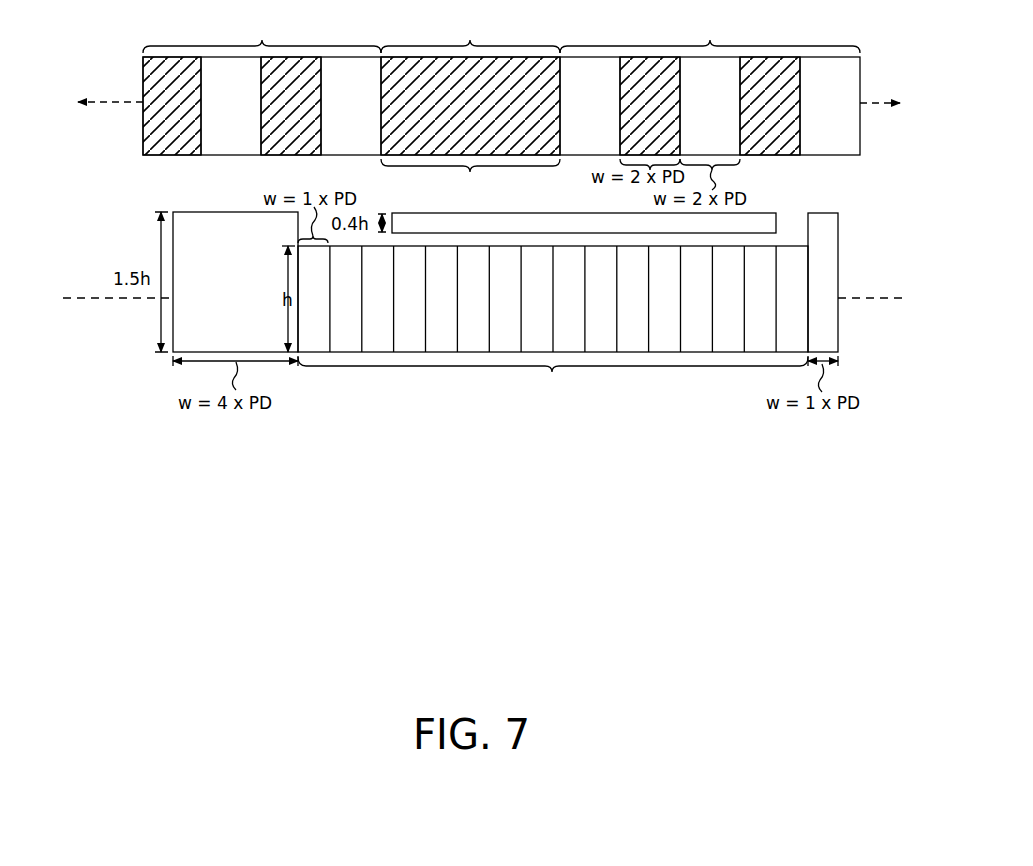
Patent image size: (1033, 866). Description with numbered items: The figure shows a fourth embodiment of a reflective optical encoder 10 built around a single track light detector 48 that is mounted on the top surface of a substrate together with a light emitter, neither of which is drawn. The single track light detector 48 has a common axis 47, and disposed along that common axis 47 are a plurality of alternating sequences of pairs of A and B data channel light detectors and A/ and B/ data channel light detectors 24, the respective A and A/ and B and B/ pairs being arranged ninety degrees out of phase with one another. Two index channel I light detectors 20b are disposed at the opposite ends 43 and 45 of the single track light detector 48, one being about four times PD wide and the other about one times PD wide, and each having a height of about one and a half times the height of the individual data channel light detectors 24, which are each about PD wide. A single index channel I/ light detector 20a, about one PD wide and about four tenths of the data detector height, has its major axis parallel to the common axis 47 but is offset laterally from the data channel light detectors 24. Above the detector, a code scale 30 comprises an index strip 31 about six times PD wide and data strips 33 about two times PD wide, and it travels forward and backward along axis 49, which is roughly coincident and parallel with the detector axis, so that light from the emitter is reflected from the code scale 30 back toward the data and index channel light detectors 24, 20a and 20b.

The reflective optical encoder 10 is at (182, 475).
The index channel I/ light detector 20a is at (572, 223).
The index channel I light detectors 20b is at (222, 225).
The data channel light detectors 24 is at (553, 324).
The code scale 30 is at (130, 77).
The index strip 31 is at (470, 105).
The data strips 33 is at (501, 85).
The end of single track light detector 43 is at (132, 325).
The end of single track light detector 45 is at (848, 265).
The common axis 47 is at (872, 299).
The single track light detector 48 is at (125, 246).
The axis of code scale 49 is at (882, 103).